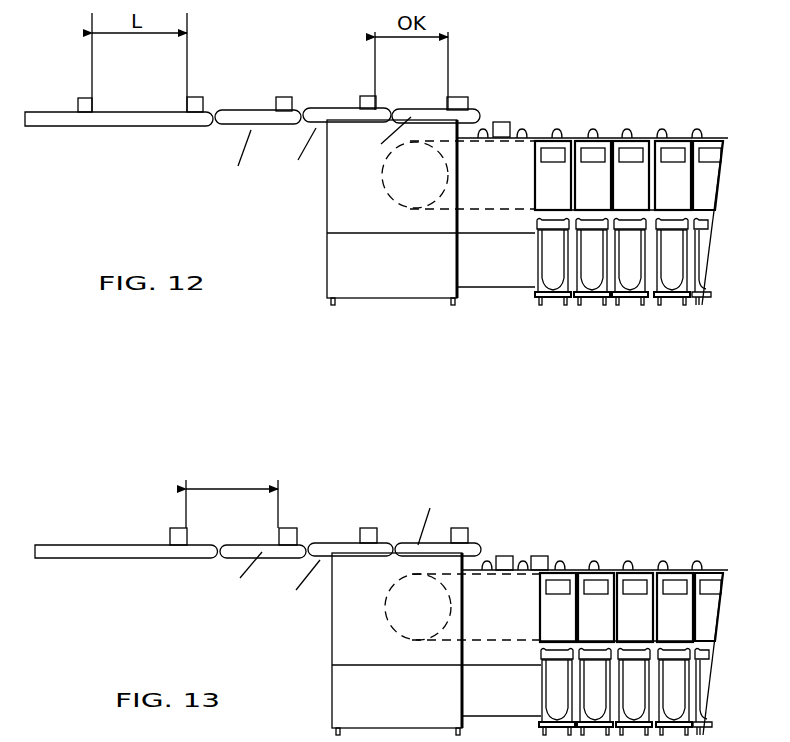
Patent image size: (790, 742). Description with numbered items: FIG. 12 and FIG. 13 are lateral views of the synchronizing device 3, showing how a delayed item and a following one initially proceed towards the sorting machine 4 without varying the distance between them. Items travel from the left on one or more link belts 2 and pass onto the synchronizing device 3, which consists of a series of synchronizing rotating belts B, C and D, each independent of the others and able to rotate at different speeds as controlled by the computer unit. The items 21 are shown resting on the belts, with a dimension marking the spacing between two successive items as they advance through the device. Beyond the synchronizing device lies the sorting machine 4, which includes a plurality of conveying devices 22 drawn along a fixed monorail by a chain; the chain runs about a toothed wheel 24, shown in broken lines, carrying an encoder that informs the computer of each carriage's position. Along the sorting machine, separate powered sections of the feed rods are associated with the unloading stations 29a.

In FIG. 12, the link belt 2 is at (135, 142).
In FIG. 13, the link belt 2 is at (126, 572).
In FIG. 12, the synchronizing device 3 is at (331, 64).
In FIG. 13, the synchronizing device 3 is at (276, 588).
In FIG. 12, the sorting machine 4 is at (592, 173).
In FIG. 13, the sorting machine 4 is at (595, 595).
In FIG. 12, the article (block) 21 is at (86, 106).
In FIG. 13, the article (block) 21 is at (175, 537).
In FIG. 12, the conveying device 22 is at (573, 131).
In FIG. 13, the conveying device 22 is at (585, 565).
In FIG. 12, the toothed wheel 24 is at (398, 170).
In FIG. 13, the toothed wheel 24 is at (410, 614).
In FIG. 12, the unloading station 29a is at (566, 188).
In FIG. 13, the unloading station 29a is at (571, 627).